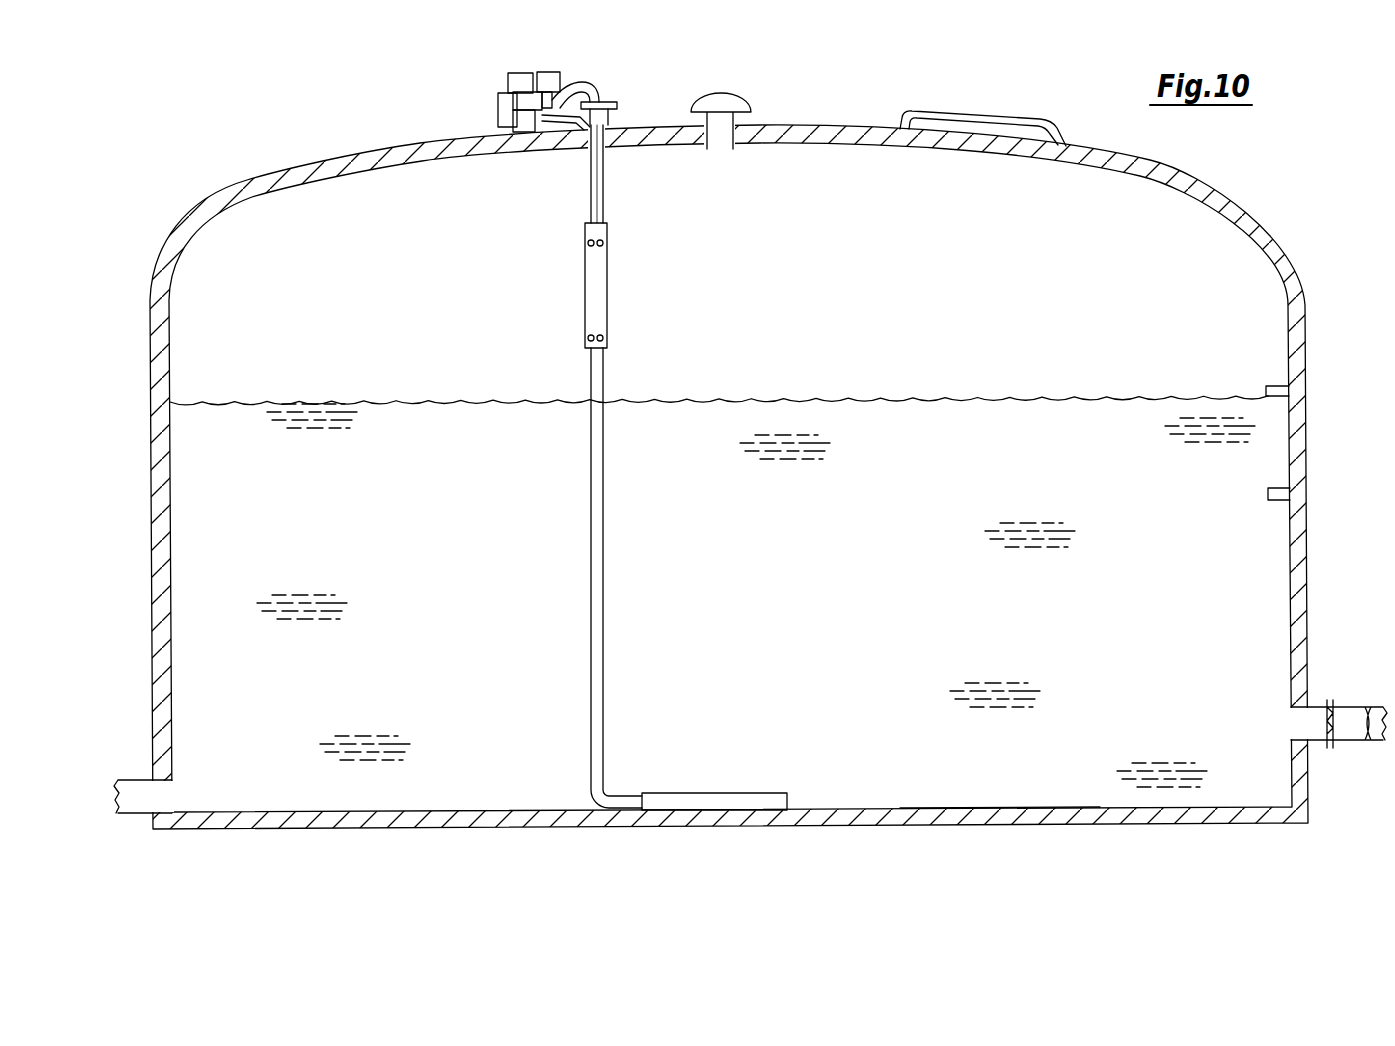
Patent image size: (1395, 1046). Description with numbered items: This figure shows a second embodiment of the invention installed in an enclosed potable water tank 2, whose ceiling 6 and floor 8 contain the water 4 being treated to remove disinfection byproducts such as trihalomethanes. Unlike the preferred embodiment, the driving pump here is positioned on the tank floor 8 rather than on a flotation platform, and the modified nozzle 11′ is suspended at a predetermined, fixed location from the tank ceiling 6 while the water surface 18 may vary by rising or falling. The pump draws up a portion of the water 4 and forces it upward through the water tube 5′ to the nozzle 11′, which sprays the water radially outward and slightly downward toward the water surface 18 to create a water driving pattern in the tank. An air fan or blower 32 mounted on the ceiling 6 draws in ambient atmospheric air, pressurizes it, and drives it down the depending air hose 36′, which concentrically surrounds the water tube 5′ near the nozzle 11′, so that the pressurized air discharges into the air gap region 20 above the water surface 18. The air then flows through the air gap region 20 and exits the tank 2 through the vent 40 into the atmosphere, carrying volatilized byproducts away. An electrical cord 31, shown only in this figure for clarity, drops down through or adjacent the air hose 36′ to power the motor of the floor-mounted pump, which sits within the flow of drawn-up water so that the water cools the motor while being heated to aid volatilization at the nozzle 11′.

The tank 2 is at (1222, 175).
The water 4 is at (436, 630).
The water tube 5′ is at (588, 528).
The ceiling 6 is at (649, 153).
The floor 8 is at (1016, 806).
The nozzle 11′ is at (613, 292).
The water surface 18 is at (970, 397).
The air gap region 20 is at (372, 291).
The electrical cord 31 is at (591, 182).
The blower 32 is at (498, 90).
The air hose 36′ is at (612, 198).
The vent 40 is at (748, 105).